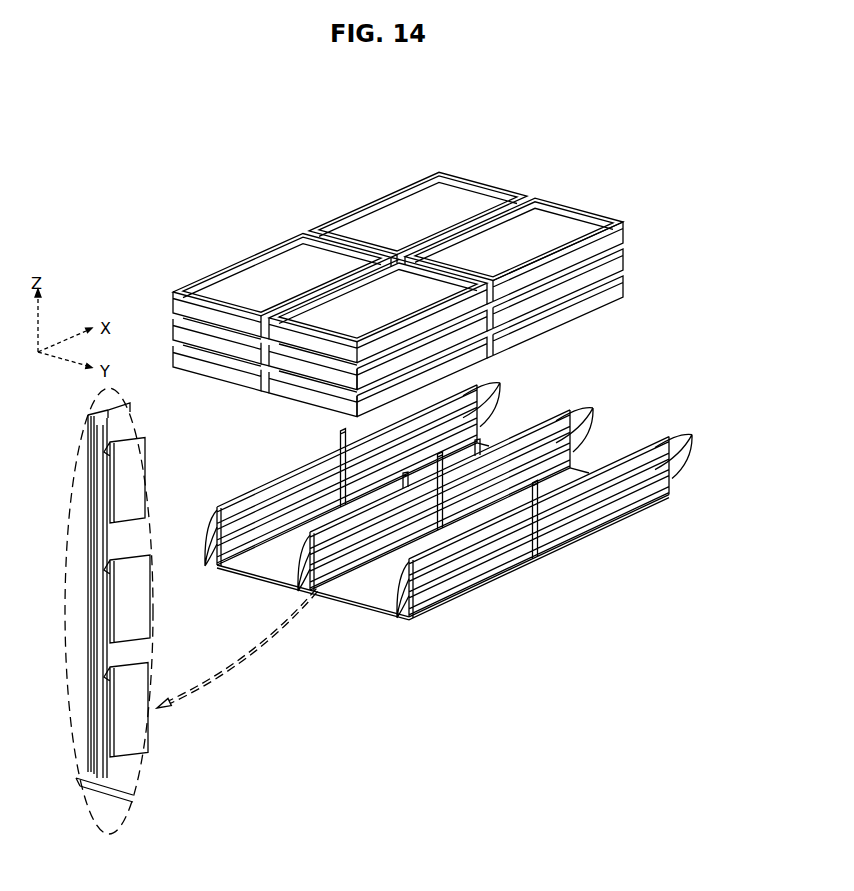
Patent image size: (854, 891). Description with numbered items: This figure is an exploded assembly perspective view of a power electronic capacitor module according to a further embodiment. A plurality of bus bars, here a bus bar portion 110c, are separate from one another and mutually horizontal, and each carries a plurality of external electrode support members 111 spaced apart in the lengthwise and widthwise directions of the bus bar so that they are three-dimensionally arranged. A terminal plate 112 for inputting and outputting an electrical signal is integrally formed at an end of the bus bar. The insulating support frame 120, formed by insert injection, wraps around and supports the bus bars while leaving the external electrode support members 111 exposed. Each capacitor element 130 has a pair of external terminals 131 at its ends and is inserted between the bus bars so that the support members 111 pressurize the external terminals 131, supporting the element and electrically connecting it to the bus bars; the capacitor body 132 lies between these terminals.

The housing end portion 110c is at (103, 655).
The external electrode support member 111 is at (135, 722).
The terminal plate 112 is at (338, 432).
The insulating support frame 120 is at (130, 775).
The capacitor element 130 is at (455, 194).
The external terminal 131 is at (514, 193).
The cell body 132 is at (576, 217).